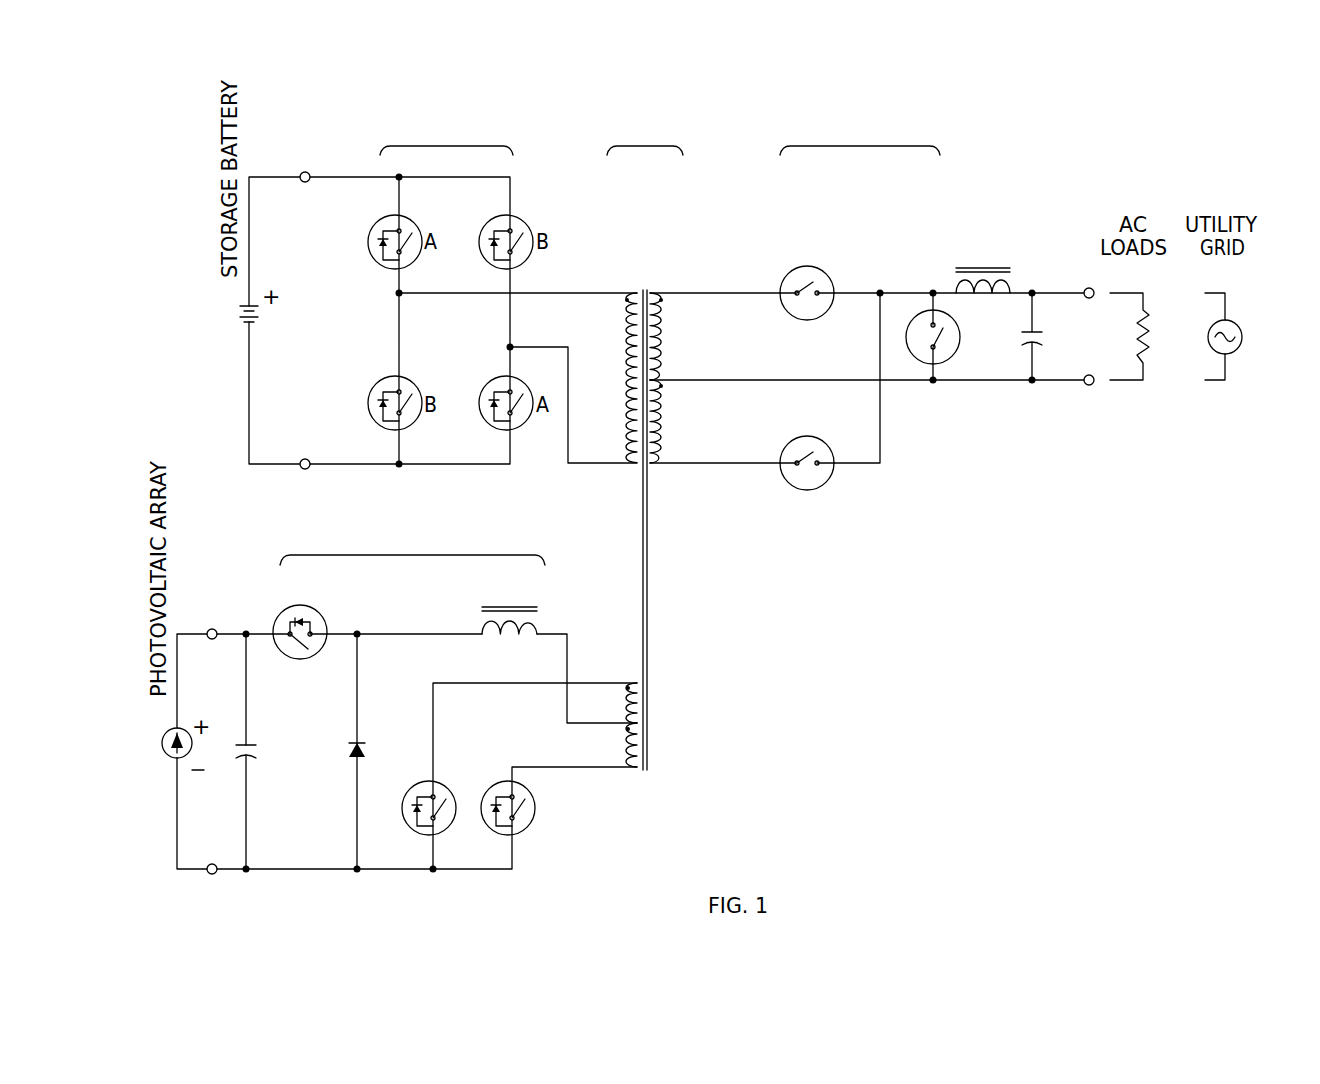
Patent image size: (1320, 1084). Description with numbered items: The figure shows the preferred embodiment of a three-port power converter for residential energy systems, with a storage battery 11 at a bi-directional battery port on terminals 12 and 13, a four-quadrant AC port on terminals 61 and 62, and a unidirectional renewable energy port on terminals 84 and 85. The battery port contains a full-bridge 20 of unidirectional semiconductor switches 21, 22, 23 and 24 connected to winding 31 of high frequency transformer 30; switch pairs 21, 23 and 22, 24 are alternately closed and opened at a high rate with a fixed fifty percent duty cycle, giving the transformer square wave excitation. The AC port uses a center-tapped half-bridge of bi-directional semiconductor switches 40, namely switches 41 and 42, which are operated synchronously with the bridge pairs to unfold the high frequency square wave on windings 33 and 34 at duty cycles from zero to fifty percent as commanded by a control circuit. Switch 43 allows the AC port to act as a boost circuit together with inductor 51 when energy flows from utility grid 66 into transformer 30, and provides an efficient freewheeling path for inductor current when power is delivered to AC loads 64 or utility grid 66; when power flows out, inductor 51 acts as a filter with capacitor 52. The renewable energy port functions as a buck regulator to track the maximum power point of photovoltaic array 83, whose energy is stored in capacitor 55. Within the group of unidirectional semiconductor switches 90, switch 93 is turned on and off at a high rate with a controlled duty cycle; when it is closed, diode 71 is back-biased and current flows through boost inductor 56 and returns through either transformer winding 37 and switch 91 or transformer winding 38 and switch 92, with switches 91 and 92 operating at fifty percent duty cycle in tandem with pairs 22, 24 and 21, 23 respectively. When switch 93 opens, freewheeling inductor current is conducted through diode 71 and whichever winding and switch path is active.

The storage battery 11 is at (235, 302).
The battery port terminal 12 is at (305, 164).
The battery port terminal 13 is at (305, 452).
The bridge 20 is at (448, 103).
The unidirectional semiconductor switch 21 is at (382, 238).
The unidirectional semiconductor switch 22 is at (494, 238).
The unidirectional semiconductor switch 23 is at (494, 394).
The unidirectional semiconductor switch 24 is at (382, 394).
The high frequency transformer 30 is at (648, 411).
The transformer winding 31 is at (616, 378).
The transformer winding 33 is at (672, 336).
The transformer winding 34 is at (672, 421).
The transformer winding 37 is at (617, 703).
The transformer winding 38 is at (617, 745).
The bi-directional semiconductor switches 40 is at (864, 103).
The bi-directional semiconductor switch 41 is at (807, 282).
The bi-directional semiconductor switch 42 is at (807, 477).
The bi-directional semiconductor switch 43 is at (946, 336).
The inductor 51 is at (983, 267).
The capacitor 52 is at (1047, 336).
The capacitor 55 is at (237, 738).
The boost inductor 56 is at (509, 607).
The AC port terminal 61 is at (1089, 280).
The AC port terminal 62 is at (1089, 366).
The AC loads 64 is at (1143, 336).
The utility grid 66 is at (1238, 336).
The diode 71 is at (346, 737).
The photovoltaic array 83 is at (167, 733).
The renewable energy port terminal 84 is at (212, 622).
The renewable energy port terminal 85 is at (212, 857).
The unidirectional semiconductor switches 90 is at (415, 523).
The unidirectional semiconductor switch 91 is at (426, 798).
The unidirectional semiconductor switch 92 is at (506, 798).
The unidirectional semiconductor switch 93 is at (301, 619).